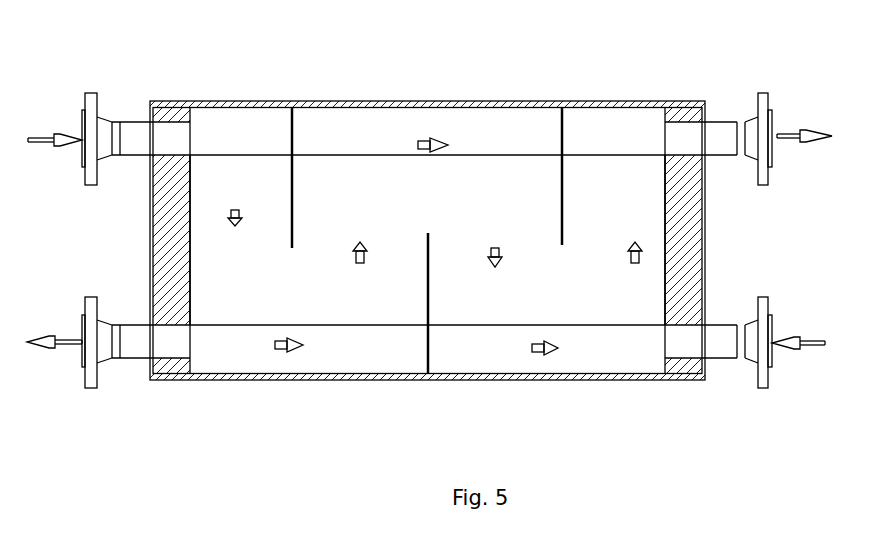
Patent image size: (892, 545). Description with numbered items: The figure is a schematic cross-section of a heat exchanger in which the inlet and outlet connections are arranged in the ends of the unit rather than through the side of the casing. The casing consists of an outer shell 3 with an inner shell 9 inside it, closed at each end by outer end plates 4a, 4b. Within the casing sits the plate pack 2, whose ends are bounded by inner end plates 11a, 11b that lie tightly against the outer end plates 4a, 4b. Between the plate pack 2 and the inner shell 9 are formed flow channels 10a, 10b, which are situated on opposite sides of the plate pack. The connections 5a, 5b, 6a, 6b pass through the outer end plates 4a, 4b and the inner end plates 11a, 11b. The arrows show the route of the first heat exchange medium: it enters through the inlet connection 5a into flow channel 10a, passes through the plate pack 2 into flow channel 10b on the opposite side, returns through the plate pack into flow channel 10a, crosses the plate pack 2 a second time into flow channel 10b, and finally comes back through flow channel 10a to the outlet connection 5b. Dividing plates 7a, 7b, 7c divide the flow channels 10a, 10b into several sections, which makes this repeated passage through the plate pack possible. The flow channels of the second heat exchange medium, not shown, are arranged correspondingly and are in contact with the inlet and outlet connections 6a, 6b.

The plate pack 2 is at (637, 188).
The outer shell 3 is at (492, 110).
The outer end plate 4a is at (160, 237).
The outer end plate 4b is at (688, 240).
The inlet connection 5a is at (126, 140).
The outlet connection 5b is at (722, 131).
The inlet connection 6a is at (717, 342).
The outlet connection 6b is at (128, 343).
The dividing plate 7a is at (292, 130).
The dividing plate 7b is at (427, 362).
The dividing plate 7c is at (562, 137).
The inner shell 9 is at (450, 108).
The flow channel 10a is at (222, 125).
The flow channel 10b is at (248, 357).
The inner end plate 11a is at (193, 273).
The inner end plate 11b is at (663, 275).